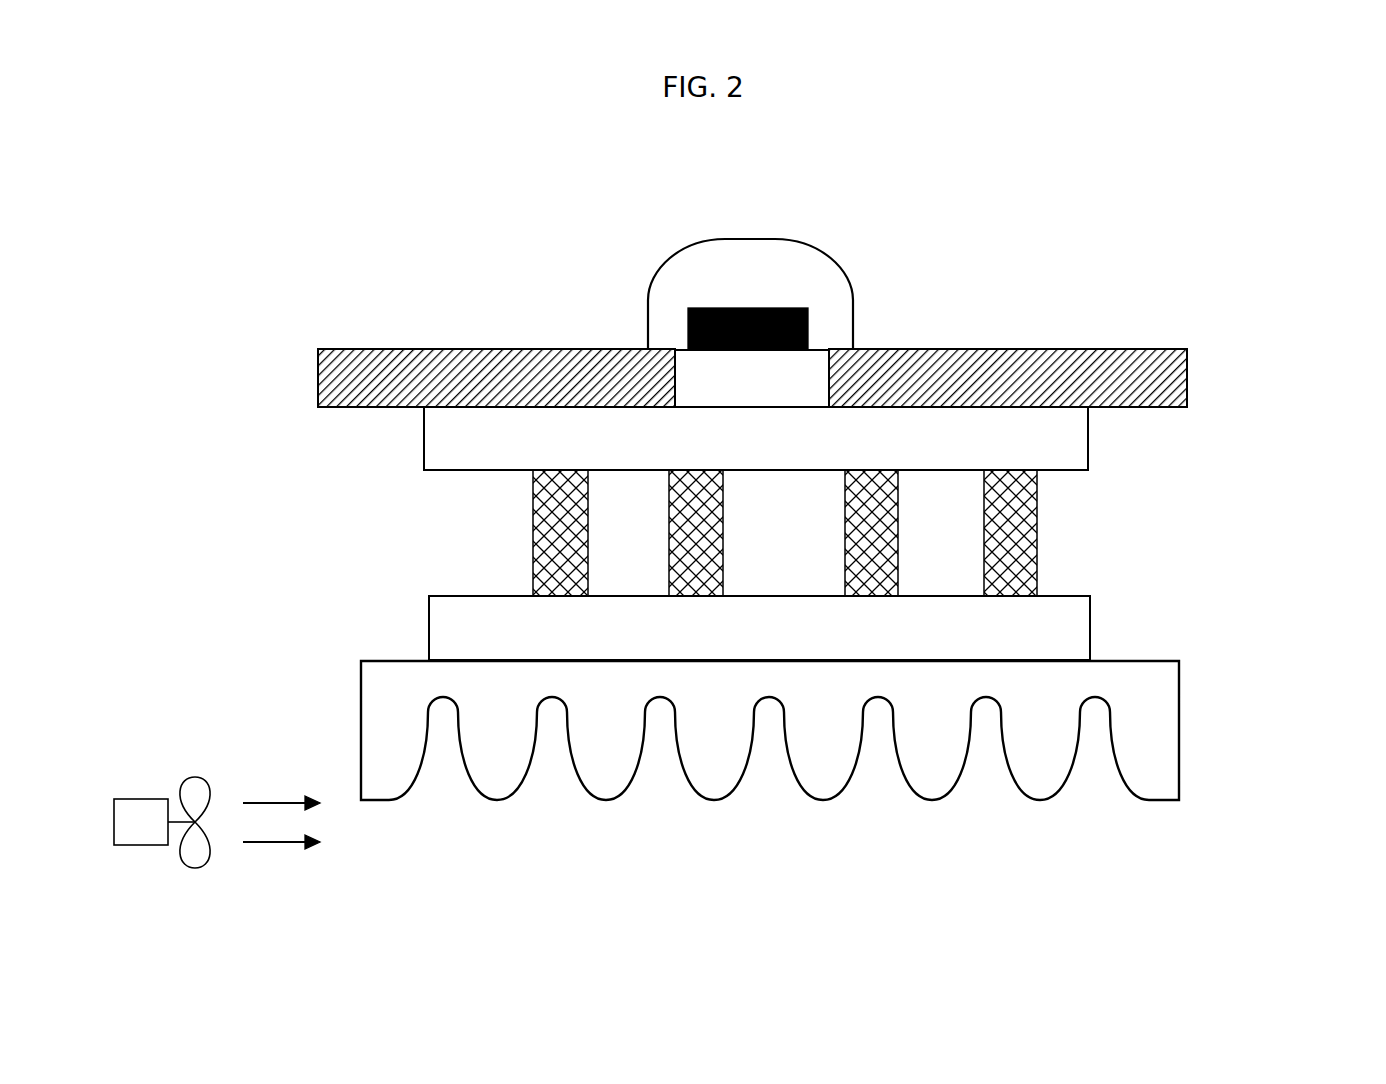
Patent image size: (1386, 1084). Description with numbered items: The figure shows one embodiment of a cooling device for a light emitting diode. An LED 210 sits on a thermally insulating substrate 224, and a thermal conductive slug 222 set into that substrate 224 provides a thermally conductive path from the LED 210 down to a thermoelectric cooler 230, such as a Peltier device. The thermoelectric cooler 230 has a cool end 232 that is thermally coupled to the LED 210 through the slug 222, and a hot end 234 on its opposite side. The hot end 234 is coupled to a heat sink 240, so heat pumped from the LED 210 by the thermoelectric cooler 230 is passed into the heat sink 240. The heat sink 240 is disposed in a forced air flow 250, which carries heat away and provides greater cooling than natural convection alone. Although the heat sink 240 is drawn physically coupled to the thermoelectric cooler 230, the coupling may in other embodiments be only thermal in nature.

The LED 210 is at (825, 272).
The thermal conductive slug 222 is at (727, 395).
The thermally insulating substrate 224 is at (1153, 377).
The thermoelectric cooler 230 is at (779, 533).
The cool end 232 is at (424, 408).
The hot end 234 is at (428, 658).
The heat sink 240 is at (1162, 759).
The forced air flow 250 is at (273, 846).